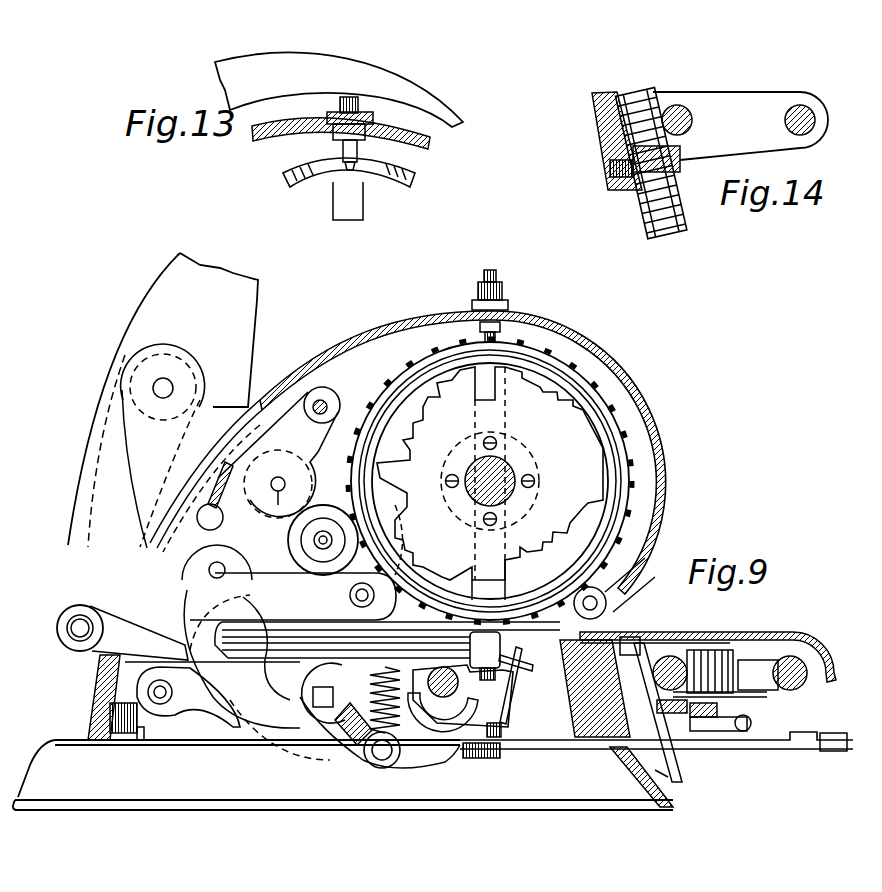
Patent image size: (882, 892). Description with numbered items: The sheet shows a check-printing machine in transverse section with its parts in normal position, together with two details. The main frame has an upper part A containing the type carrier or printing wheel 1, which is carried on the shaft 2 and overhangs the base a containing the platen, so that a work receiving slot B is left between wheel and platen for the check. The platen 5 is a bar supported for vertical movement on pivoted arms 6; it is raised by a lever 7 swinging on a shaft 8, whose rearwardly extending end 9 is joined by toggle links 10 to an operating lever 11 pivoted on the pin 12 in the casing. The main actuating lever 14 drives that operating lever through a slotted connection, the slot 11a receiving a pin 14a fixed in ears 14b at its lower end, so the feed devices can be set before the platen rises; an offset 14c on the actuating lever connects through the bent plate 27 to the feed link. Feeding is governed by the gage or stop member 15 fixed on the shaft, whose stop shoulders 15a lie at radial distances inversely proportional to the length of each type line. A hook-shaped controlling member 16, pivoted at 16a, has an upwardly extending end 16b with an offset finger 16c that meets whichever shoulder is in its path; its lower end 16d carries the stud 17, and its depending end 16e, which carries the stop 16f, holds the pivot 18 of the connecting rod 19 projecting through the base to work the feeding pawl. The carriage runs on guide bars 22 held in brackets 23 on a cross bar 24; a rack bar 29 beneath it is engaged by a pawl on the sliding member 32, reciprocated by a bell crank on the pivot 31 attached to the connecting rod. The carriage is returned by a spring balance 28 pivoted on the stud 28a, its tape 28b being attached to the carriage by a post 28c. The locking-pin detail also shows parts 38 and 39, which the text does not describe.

In FIG. 9, the type carrier or printing wheel 1 is at (440, 367).
In FIG. 9, the shaft 2 is at (497, 477).
In FIG. 9, the platen 5 is at (485, 656).
In FIG. 9, the pivoted arms 6 is at (255, 620).
In FIG. 9, the lever 7 is at (482, 740).
In FIG. 9, the shaft 8 is at (430, 680).
In FIG. 9, the rearwardly extending end 9 is at (188, 697).
In FIG. 9, the toggle links 10 is at (152, 704).
In FIG. 9, the operating lever 11 is at (98, 512).
In FIG. 9, the slot 11a is at (220, 550).
In FIG. 9, the pin 12 is at (166, 387).
In FIG. 13, the main actuating lever 14 is at (330, 90).
In FIG. 9, the main actuating lever 14 is at (212, 301).
In FIG. 9, the pin 14a is at (283, 544).
In FIG. 9, the ears 14b is at (296, 552).
In FIG. 9, the offset or extension 14c is at (80, 645).
In FIG. 9, the gage or stop member 15 is at (490, 483).
In FIG. 9, the stop shoulders 15a is at (607, 472).
In FIG. 9, the controlling member or lever 16 is at (290, 650).
In FIG. 9, the pivot 16a is at (355, 600).
In FIG. 9, the upwardly extending end 16b is at (388, 508).
In FIG. 9, the offset finger 16c is at (274, 486).
In FIG. 9, the lower end 16d is at (280, 724).
In FIG. 9, the depending end 16e is at (350, 733).
In FIG. 9, the stop 16f is at (413, 743).
In FIG. 9, the stud 17 is at (508, 695).
In FIG. 9, the pivot 18 is at (387, 758).
In FIG. 9, the connecting rod 19 is at (717, 742).
In FIG. 14, the guide bars 22 is at (693, 122).
In FIG. 9, the guide bars 22 is at (670, 660).
In FIG. 14, the brackets 23 is at (820, 135).
In FIG. 9, the brackets 23 is at (668, 693).
In FIG. 9, the cross bar 24 is at (531, 685).
In FIG. 9, the bent plate 27 is at (210, 683).
In FIG. 14, the spring balance 28 is at (643, 200).
In FIG. 9, the spring balance 28 is at (662, 723).
In FIG. 14, the stud 28a is at (663, 157).
In FIG. 14, the tape 28b is at (665, 233).
In FIG. 9, the post 28c is at (627, 638).
In FIG. 9, the rack bar 29 is at (673, 717).
In FIG. 9, the pivot 31 is at (708, 718).
In FIG. 9, the sliding member 32 is at (728, 729).
In FIG. 13, the bracket 38 is at (387, 170).
In FIG. 13, the bolt 39 is at (343, 142).
In FIG. 13, the upper part of the casing A is at (432, 140).
In FIG. 9, the upper part of the casing A is at (623, 387).
In FIG. 9, the work receiving slot B is at (397, 610).
In FIG. 9, the base a is at (559, 700).